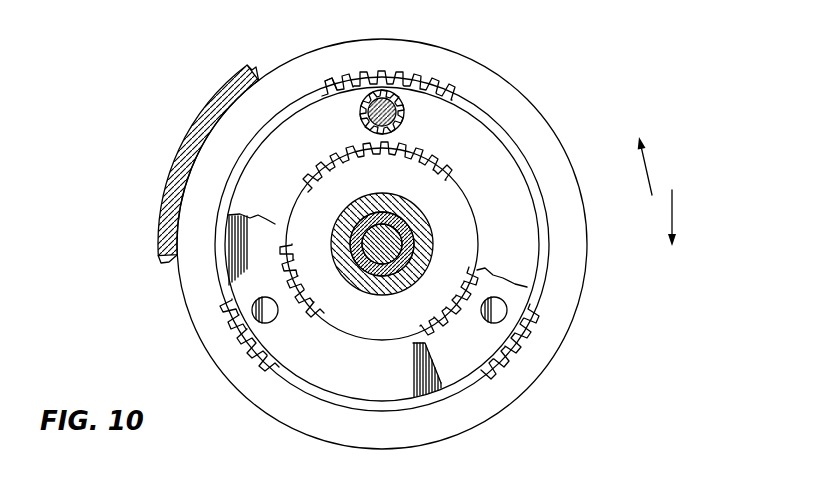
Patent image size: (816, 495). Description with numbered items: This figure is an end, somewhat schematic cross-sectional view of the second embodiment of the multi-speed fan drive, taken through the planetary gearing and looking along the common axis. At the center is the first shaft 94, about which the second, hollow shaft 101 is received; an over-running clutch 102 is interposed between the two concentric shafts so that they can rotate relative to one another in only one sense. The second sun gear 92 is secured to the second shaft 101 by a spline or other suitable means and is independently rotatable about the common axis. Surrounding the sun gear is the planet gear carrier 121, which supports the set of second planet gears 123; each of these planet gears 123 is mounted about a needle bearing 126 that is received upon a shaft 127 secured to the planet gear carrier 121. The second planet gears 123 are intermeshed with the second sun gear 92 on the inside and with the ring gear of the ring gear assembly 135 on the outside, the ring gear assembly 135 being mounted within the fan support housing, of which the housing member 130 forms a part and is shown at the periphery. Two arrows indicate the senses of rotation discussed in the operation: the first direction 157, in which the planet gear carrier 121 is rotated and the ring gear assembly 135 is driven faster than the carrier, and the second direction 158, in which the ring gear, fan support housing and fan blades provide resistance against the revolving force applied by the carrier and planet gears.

The second sun gear 92 is at (430, 183).
The first shaft 94 is at (387, 237).
The second shaft 101 is at (343, 228).
The over-running clutch 102 is at (385, 296).
The planet gear carrier 121 is at (250, 272).
The second planet gears 123 is at (333, 91).
The needle bearings 126 is at (362, 115).
The shafts 127 is at (400, 114).
The housing member 130 is at (199, 116).
The ring gear assembly 135 is at (445, 73).
The first direction 157 is at (647, 163).
The second direction 158 is at (672, 207).